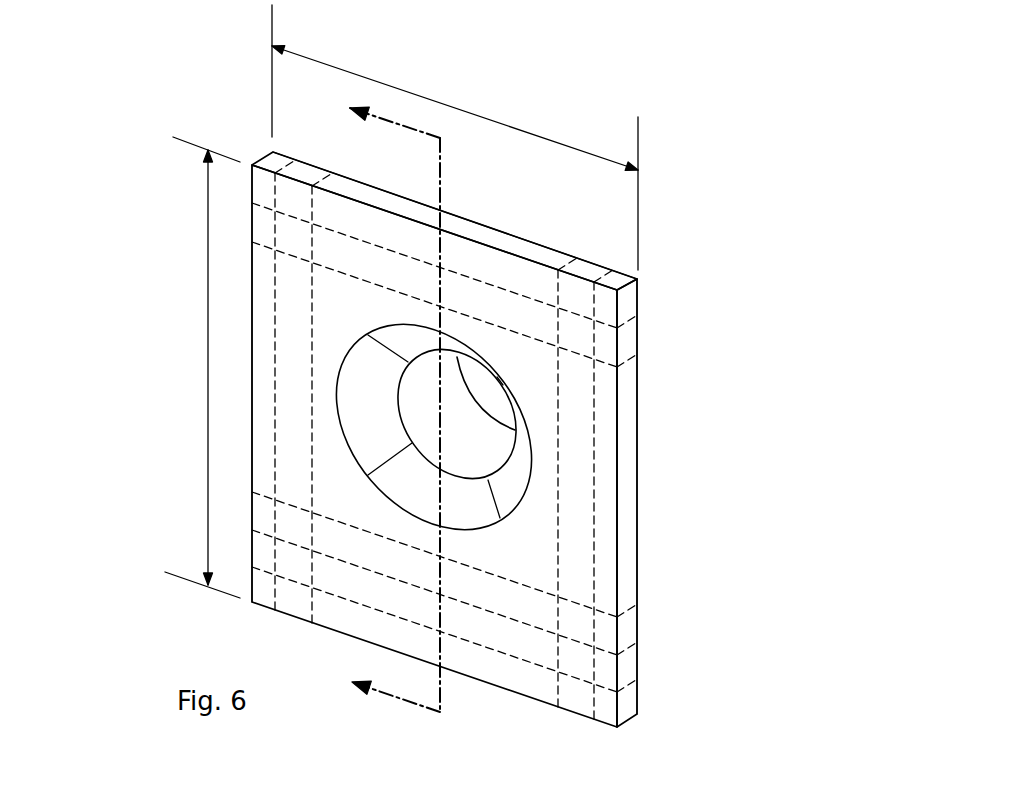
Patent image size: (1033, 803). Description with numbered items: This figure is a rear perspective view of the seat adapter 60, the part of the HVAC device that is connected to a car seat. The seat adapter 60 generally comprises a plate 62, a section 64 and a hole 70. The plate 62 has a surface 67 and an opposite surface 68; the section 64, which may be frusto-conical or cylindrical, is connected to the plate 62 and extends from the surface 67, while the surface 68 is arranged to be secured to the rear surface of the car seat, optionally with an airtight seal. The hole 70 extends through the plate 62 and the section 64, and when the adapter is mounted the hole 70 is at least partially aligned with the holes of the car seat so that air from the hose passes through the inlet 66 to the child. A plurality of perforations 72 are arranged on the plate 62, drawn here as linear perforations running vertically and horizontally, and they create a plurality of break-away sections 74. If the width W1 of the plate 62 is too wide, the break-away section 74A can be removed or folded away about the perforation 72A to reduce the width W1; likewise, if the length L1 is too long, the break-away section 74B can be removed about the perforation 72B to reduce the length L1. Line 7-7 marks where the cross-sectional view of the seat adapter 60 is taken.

The seat adapter 60 is at (758, 72).
The plate 62 is at (628, 460).
The section 64 is at (470, 352).
The inlet 66 is at (400, 402).
The surface 67 is at (313, 167).
The surface 68 is at (263, 227).
The hole 70 is at (465, 450).
The plurality of perforations 72 is at (348, 460).
The perforation 72A is at (275, 550).
The perforation 72B is at (473, 278).
The plurality of break-away sections 74 is at (343, 472).
The break-away section 74A is at (267, 448).
The break-away section 74B is at (318, 215).
The line 7- 7 is at (385, 402).
The width W1 is at (493, 122).
The length L1 is at (207, 369).